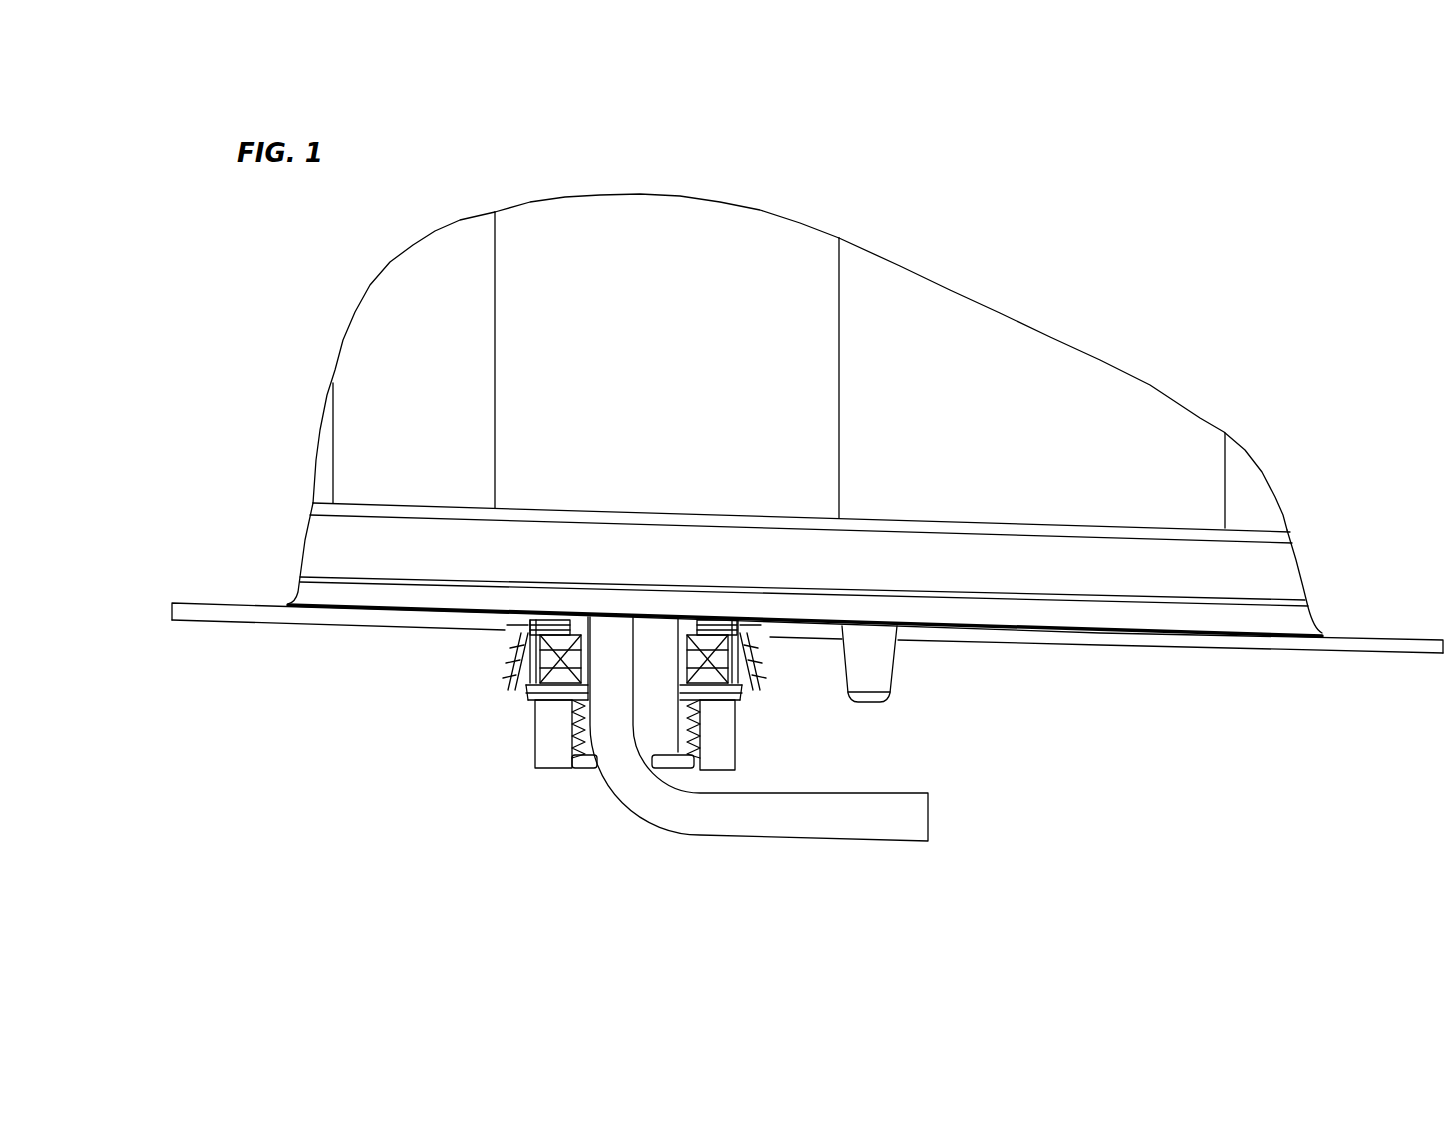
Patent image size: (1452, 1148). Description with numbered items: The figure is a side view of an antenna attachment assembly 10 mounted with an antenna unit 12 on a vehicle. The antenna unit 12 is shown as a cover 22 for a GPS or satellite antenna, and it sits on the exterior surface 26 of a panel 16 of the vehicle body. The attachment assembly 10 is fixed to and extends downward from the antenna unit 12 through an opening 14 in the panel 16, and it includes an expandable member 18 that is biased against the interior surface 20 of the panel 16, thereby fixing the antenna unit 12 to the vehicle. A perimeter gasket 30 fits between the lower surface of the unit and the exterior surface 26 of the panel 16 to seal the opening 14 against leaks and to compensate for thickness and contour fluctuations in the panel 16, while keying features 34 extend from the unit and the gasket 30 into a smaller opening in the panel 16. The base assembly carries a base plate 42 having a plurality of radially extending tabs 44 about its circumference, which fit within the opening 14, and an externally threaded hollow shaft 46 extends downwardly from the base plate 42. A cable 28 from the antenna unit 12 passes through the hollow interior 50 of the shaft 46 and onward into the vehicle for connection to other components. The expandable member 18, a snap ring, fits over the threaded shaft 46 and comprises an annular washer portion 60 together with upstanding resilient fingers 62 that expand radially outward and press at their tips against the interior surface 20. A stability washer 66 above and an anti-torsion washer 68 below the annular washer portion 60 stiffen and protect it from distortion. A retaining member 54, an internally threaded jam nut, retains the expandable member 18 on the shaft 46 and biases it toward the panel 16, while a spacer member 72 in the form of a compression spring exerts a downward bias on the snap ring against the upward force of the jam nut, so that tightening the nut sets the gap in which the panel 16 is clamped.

The antenna attachment assembly 10 is at (528, 790).
The antenna unit 12 is at (1002, 340).
The opening 14 is at (512, 622).
The panel 16 is at (1265, 640).
The expandable member 18 is at (745, 668).
The interior surface 20 is at (1172, 650).
The cover 22 is at (728, 226).
The exterior surface 26 is at (1373, 636).
The cable 28 is at (898, 800).
The perimeter gasket 30 is at (1285, 578).
The keying features 34 is at (887, 668).
The base plate 42 is at (580, 620).
The radially extending tabs 44 is at (740, 630).
The externally threaded hollow shaft 46 is at (680, 748).
The hollow interior 50 is at (737, 765).
The retaining member 54 is at (557, 747).
The annular washer portion 60 is at (525, 696).
The fingers 62 is at (538, 614).
The stability washer 66 is at (522, 682).
The anti-torsion washer 68 is at (547, 707).
The spacer member 72 is at (742, 680).